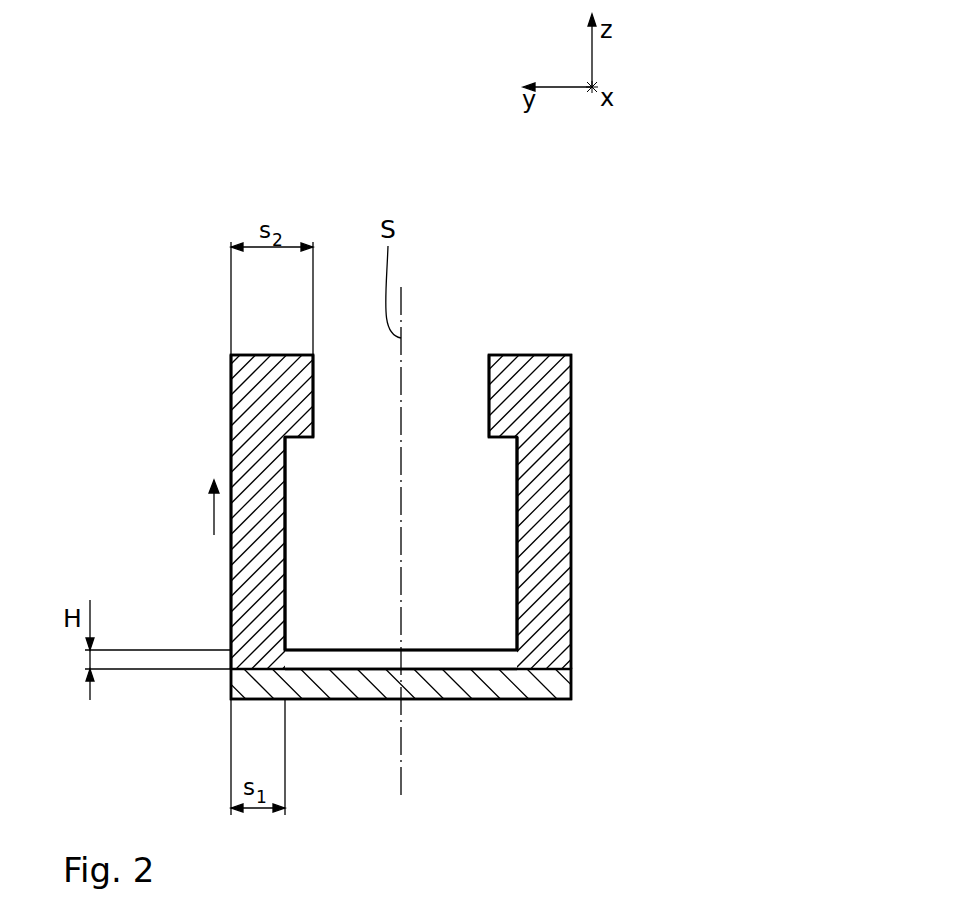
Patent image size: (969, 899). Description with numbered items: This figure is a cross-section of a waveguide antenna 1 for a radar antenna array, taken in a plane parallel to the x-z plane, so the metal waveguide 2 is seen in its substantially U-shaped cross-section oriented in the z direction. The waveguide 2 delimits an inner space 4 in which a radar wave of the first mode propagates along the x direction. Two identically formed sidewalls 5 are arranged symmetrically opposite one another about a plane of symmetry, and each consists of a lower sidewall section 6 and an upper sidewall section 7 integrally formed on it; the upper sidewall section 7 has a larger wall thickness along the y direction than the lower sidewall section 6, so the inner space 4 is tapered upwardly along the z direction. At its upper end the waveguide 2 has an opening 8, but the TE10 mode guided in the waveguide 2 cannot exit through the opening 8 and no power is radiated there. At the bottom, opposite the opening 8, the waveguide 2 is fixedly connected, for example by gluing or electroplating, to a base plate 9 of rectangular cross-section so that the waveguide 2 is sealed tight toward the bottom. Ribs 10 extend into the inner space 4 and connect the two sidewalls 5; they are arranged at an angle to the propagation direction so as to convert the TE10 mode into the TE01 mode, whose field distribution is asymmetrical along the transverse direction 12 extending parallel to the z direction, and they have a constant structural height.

The waveguide antenna 1 is at (513, 303).
The waveguide 2 is at (213, 456).
The inner space 4 is at (378, 563).
The sidewalls 5 is at (218, 562).
The lower sidewall section 6 is at (231, 618).
The upper sidewall section 7 is at (231, 403).
The opening 8 is at (430, 355).
The base plate 9 is at (582, 686).
The ribs 10 is at (361, 662).
The transverse direction 12 is at (214, 505).